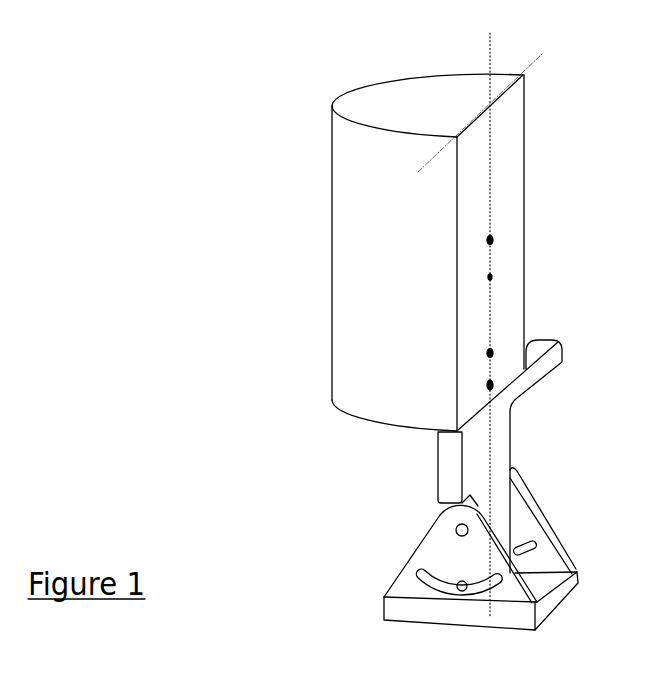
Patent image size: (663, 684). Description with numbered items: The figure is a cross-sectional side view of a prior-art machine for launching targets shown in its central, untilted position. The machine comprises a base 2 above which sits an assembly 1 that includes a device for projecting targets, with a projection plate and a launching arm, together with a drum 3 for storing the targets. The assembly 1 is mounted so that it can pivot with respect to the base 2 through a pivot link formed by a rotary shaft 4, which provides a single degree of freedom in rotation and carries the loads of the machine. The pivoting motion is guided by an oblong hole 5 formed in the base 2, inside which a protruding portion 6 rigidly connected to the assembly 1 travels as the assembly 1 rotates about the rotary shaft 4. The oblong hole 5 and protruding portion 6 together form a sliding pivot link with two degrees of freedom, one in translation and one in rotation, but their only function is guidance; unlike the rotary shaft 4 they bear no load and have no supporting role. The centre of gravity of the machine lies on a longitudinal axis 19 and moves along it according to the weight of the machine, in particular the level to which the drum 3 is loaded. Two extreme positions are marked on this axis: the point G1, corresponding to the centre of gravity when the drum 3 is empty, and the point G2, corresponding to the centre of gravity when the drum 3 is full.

The assembly 1 is at (355, 290).
The base 2 is at (560, 594).
The drum 3 is at (405, 252).
The rotary shaft 4 is at (456, 527).
The oblong hole 5 is at (427, 580).
The protruding portion 6 is at (463, 591).
The longitudinal axis 19 is at (488, 58).
The centre of gravity when drum is empty G1 is at (490, 353).
The centre of gravity when drum is full G2 is at (490, 240).